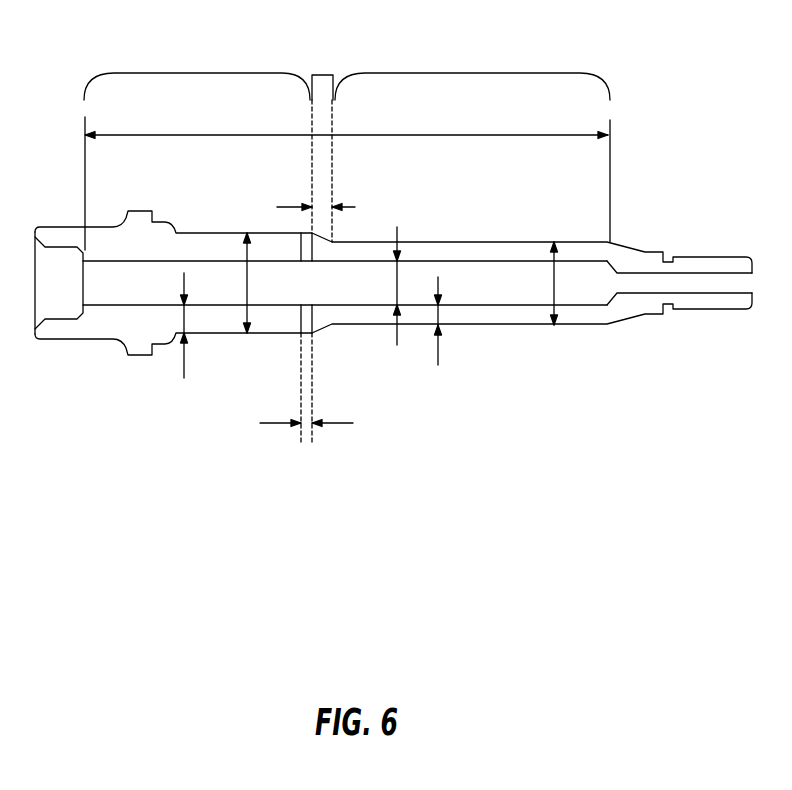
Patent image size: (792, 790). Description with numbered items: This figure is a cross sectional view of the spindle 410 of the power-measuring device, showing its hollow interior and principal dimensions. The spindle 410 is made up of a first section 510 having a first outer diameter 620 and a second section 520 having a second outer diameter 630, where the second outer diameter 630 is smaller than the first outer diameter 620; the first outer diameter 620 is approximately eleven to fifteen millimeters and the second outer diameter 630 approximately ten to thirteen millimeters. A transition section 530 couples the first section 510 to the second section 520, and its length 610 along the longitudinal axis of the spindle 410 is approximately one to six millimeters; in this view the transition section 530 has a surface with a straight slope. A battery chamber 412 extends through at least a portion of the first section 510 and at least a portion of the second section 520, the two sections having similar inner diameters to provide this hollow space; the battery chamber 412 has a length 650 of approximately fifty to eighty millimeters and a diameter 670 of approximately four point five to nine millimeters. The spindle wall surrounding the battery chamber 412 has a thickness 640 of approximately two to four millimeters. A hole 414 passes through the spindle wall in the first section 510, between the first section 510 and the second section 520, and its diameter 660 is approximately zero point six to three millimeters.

The spindle 410 is at (702, 303).
The battery chamber 412 is at (575, 295).
The hole 414 is at (310, 328).
The first section 510 is at (175, 72).
The second section 520 is at (518, 72).
The transition section 530 is at (323, 72).
The length of the transition section 610 is at (320, 205).
The first outer diameter 620 is at (245, 283).
The second outer diameter 630 is at (555, 297).
The thickness of the spindle wall 640 is at (187, 317).
The length of the battery chamber 650 is at (398, 135).
The diameter of the hole 660 is at (305, 423).
The diameter of the battery chamber 670 is at (395, 287).